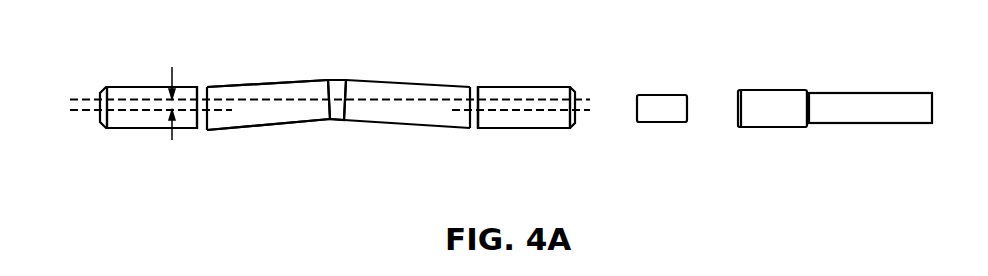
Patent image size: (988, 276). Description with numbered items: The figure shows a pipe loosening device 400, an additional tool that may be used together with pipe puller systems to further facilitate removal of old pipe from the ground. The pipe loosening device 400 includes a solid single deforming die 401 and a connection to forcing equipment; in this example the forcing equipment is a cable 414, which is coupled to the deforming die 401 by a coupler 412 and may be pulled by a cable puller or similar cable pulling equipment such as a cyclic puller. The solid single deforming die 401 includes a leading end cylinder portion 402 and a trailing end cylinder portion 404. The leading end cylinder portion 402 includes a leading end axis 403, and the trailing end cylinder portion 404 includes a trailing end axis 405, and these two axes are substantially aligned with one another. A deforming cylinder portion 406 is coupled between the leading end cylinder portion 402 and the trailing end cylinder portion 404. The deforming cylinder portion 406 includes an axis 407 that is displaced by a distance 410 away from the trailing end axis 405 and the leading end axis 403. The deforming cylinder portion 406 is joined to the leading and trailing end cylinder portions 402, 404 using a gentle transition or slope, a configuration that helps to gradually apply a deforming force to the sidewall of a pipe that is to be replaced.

The pipe loosening device 400 is at (798, 198).
The solid single deforming die 401 is at (308, 152).
The leading end cylinder portion 402 is at (490, 86).
The leading end axis 403 is at (535, 107).
The trailing end cylinder portion 404 is at (157, 86).
The trailing end axis 405 is at (88, 112).
The deforming cylinder portion 406 is at (338, 90).
The axis 407 is at (307, 98).
The distance 410 is at (172, 77).
The coupler 412 is at (660, 122).
The cable 414 is at (885, 100).